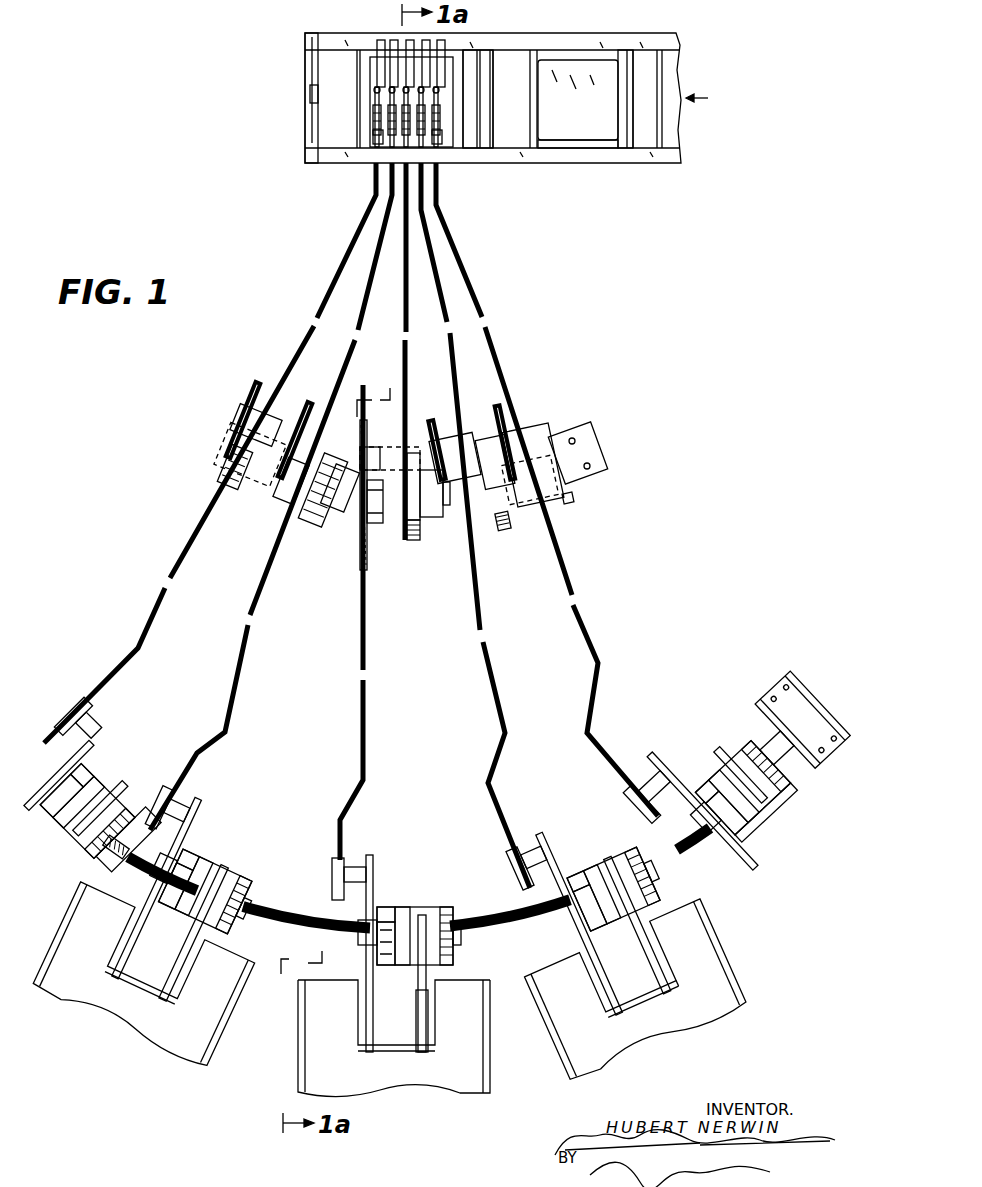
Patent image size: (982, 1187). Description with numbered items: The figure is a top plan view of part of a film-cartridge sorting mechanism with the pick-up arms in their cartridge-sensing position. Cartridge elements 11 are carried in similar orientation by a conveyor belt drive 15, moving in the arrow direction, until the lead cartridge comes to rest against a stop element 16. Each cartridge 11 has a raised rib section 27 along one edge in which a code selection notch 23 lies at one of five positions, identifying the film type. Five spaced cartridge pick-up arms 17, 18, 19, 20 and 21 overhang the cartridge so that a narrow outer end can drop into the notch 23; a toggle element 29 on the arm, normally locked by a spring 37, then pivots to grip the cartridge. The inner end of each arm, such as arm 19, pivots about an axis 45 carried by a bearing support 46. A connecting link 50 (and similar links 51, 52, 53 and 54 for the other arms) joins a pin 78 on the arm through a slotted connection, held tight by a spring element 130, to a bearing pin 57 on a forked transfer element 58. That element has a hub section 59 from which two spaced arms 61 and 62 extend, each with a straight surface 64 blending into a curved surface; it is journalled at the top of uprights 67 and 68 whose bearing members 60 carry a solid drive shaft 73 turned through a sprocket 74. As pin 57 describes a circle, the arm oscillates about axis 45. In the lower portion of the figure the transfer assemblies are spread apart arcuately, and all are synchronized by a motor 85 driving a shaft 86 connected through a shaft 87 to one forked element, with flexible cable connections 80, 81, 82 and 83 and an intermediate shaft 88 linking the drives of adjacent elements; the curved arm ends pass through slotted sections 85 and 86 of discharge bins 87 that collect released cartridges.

The cartridge element 11 is at (478, 137).
The conveyor belt drive 15 is at (672, 127).
The stop element 16 is at (305, 48).
The cartridge pick-up arm 17 is at (357, 233).
The cartridge pick-up arm 18 is at (363, 300).
The cartridge pick-up arm 19 is at (404, 300).
The cartridge pick-up arm 20 is at (443, 305).
The cartridge pick-up arm 21 is at (467, 275).
The code selection notch 23 is at (400, 147).
The raised rib section 27 is at (552, 148).
The toggle element 29 is at (393, 42).
The spring 37 is at (383, 140).
The pivot axis 45 is at (393, 512).
The bearing support 46 is at (438, 520).
The connecting link 50 is at (367, 638).
The connecting link 51 is at (157, 622).
The connecting link 52 is at (250, 641).
The connecting link 53 is at (487, 650).
The connecting link 54 is at (590, 622).
The bearing pin 57 is at (360, 858).
The forked transfer element 58 is at (376, 906).
The hub section 59 is at (408, 912).
The bearing member 60 is at (460, 925).
The arm of forked transfer element 61 is at (366, 972).
The arm of forked transfer element 62 is at (428, 1014).
The straight surface 64 is at (428, 977).
The upright 67 is at (378, 927).
The upright 68 is at (450, 962).
The solid drive shaft 73 is at (393, 963).
The sprocket 74 is at (232, 882).
The pin 78 is at (238, 417).
The flexible cable connection 80 is at (692, 852).
The flexible cable connection 81 is at (536, 924).
The flexible cable connection 82 is at (276, 920).
The flexible cable connection 83 is at (110, 852).
The motor 85 is at (362, 1018).
The shaft 86 is at (436, 1040).
The shaft 87 is at (300, 1072).
The shaft 88 is at (610, 864).
The spring element 130 is at (240, 470).